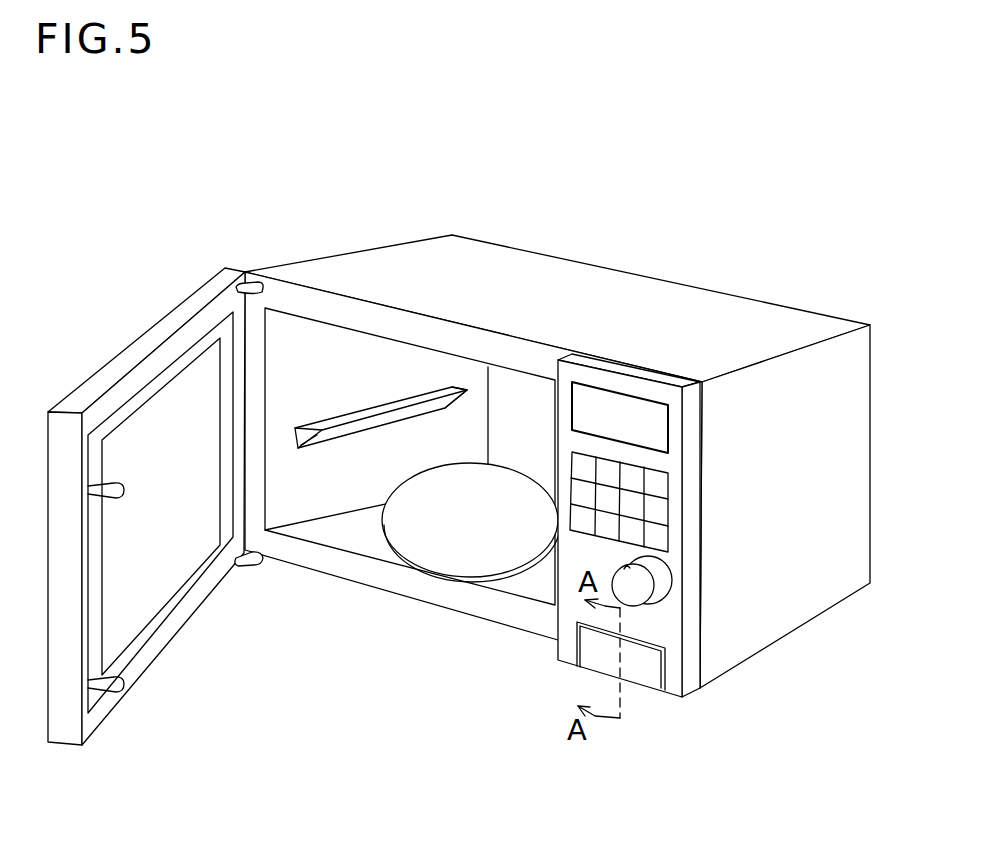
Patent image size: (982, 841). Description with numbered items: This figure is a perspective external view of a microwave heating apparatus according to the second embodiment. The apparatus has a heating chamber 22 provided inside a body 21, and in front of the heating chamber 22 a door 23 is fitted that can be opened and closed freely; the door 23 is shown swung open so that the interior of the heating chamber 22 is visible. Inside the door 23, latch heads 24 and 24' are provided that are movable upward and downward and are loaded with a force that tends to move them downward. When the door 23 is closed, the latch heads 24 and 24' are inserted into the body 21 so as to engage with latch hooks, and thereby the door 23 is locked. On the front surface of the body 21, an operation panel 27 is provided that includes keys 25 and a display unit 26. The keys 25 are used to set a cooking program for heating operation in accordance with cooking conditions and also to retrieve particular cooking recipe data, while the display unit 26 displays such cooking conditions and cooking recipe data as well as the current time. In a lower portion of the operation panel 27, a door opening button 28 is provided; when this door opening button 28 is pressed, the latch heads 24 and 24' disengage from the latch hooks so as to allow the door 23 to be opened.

The body 21 is at (612, 290).
The heating chamber 22 is at (442, 503).
The door 23 is at (152, 337).
The latch head 24 is at (116, 728).
The latch head 24' is at (138, 465).
The keys 25 is at (660, 580).
The display unit 26 is at (635, 400).
The operation panel 27 is at (572, 578).
The door opening button 28 is at (648, 672).